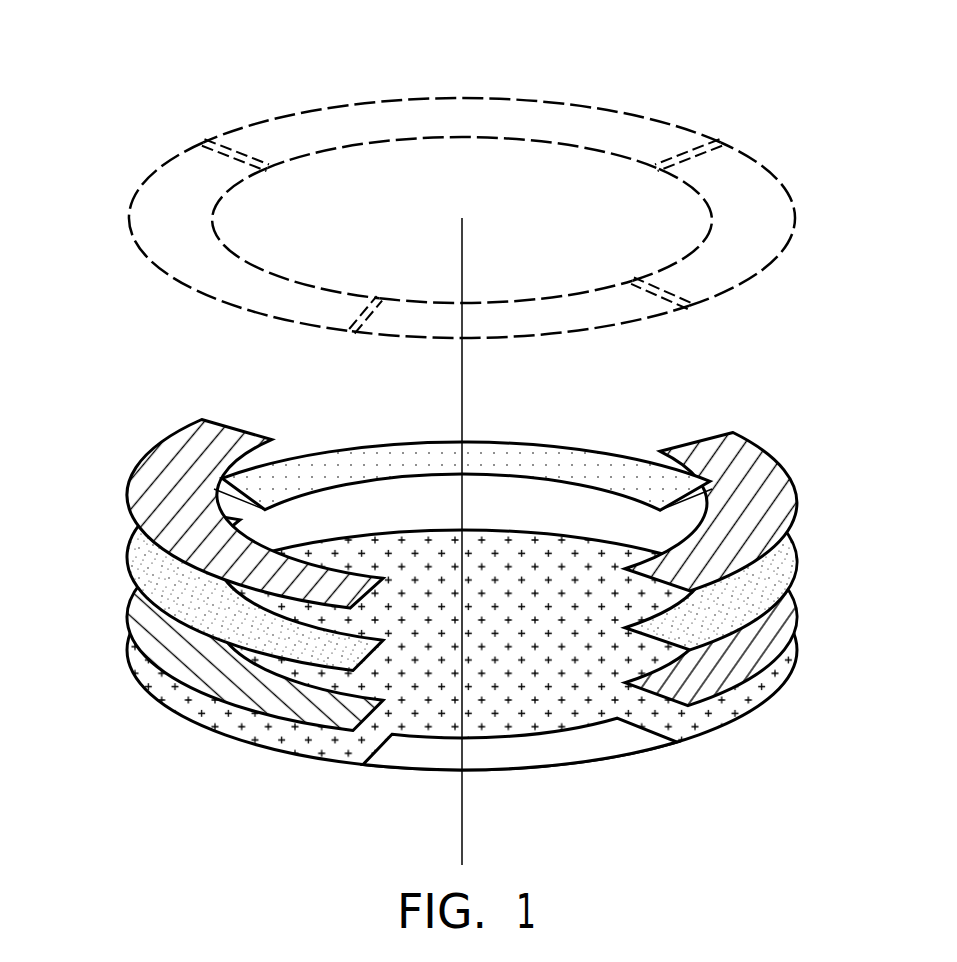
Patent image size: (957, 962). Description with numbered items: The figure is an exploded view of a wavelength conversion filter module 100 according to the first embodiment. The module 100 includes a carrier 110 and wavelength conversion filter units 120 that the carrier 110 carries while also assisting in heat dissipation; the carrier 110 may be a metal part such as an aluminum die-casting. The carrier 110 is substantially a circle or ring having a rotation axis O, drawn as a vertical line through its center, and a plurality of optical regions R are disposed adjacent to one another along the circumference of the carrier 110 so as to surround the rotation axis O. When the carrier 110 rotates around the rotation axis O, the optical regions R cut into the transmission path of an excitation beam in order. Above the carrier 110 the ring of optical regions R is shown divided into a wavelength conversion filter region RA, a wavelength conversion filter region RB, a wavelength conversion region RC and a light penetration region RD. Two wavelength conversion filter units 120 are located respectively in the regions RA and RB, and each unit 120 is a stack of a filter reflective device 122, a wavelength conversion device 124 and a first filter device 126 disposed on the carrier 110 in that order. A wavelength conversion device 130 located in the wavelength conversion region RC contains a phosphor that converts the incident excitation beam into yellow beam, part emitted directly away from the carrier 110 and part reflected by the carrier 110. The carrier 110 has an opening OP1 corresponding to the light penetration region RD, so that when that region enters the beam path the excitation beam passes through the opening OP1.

The wavelength conversion filter module 100 is at (462, 617).
The carrier 110 is at (472, 687).
The opening OP1 is at (590, 741).
The wavelength conversion filter unit 120 is at (462, 575).
The filter reflective device 122 is at (138, 607).
The wavelength conversion device 124 is at (140, 557).
The first filter device 126 is at (56, 612).
The wavelength conversion device 130 is at (531, 457).
The rotation axis O is at (462, 258).
The optical regions R is at (495, 199).
The wavelength conversion filter region RA is at (795, 203).
The wavelength conversion filter region RB is at (182, 277).
The wavelength conversion region RC is at (482, 96).
The light penetration region RD is at (600, 327).